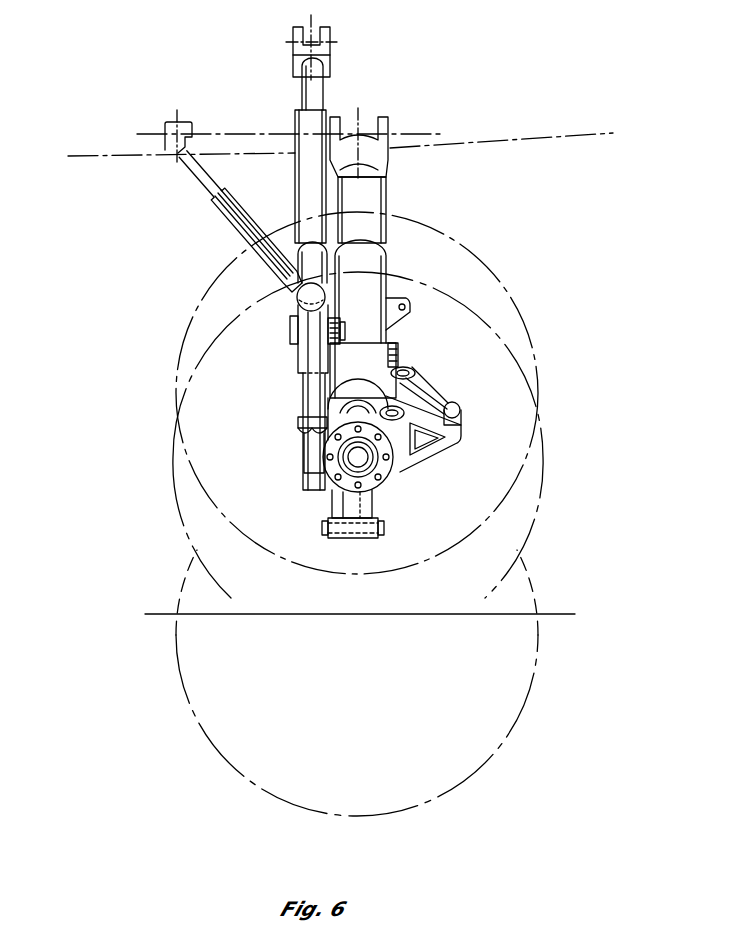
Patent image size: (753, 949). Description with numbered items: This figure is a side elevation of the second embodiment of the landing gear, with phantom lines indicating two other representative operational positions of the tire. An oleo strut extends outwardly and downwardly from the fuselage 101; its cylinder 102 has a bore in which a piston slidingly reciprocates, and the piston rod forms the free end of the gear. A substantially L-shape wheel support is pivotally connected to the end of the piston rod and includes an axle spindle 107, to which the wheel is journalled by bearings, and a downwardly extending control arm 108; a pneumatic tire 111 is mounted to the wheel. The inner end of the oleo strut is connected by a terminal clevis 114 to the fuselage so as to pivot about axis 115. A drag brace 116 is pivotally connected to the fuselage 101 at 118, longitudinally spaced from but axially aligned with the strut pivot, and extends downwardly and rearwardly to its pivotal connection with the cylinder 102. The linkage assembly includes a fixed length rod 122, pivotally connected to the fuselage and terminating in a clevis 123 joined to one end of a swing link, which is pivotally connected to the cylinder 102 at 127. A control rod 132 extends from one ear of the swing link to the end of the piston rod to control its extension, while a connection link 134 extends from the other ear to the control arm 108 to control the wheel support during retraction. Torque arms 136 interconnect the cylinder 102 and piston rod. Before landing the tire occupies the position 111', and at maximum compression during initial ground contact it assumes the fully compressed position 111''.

The fuselage 101 is at (556, 142).
The cylinder 102 is at (387, 200).
The axle spindle 107 is at (385, 469).
The control arm 108 is at (367, 506).
The pneumatic tire 111 is at (380, 435).
The tire position before landing 111' is at (380, 683).
The fully compressed tire position 111'' is at (370, 393).
The terminal clevis 114 is at (392, 152).
The pivot axis 115 is at (412, 132).
The drag brace 116 is at (226, 213).
The drag brace pivotal connection 118 is at (176, 134).
The fixed length rod 122 is at (306, 184).
The clevis 123 is at (300, 43).
The swing link pivotal connection 127 is at (300, 352).
The control rod 132 is at (299, 446).
The connection link 134 is at (330, 497).
The torque arms 136 is at (420, 395).